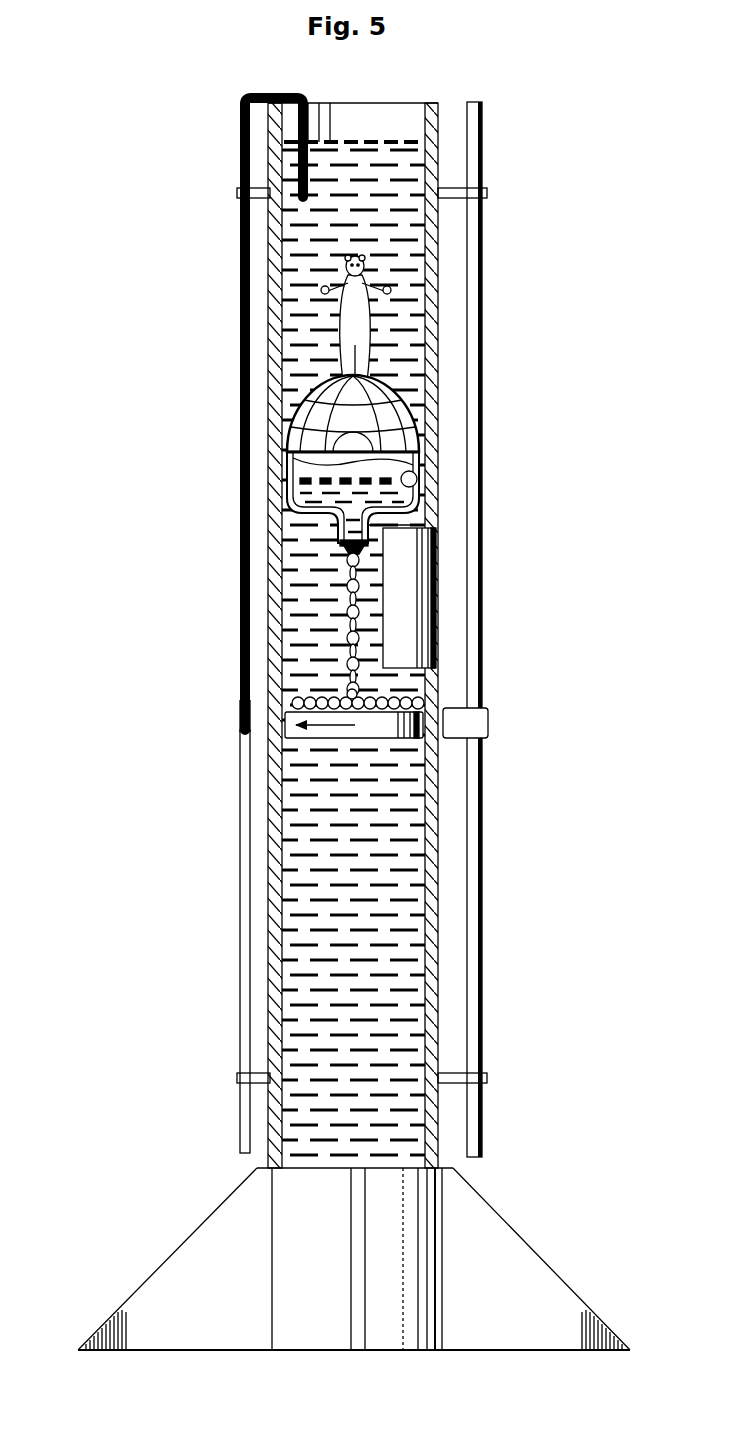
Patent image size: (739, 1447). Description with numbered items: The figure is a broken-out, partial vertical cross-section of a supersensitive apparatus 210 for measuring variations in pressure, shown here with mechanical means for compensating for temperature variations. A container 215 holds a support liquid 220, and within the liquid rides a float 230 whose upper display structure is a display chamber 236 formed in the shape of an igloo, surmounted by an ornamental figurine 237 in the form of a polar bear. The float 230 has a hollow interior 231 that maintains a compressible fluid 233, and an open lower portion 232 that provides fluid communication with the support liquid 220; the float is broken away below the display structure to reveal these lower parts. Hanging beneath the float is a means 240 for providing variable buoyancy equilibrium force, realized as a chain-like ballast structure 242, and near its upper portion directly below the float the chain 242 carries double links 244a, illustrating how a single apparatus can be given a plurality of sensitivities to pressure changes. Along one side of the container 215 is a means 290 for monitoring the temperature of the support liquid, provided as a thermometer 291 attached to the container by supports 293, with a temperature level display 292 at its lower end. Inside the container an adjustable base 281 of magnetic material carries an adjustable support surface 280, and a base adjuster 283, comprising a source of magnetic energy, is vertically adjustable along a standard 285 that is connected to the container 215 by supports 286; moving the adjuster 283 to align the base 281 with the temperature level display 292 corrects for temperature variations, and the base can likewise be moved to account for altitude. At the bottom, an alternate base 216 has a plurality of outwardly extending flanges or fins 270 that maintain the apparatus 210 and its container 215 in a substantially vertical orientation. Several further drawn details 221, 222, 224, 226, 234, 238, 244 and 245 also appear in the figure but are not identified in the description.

The supersensitive apparatus 210 is at (170, 572).
The container 215 is at (266, 857).
The base 216 is at (393, 1332).
The support liquid 220 is at (405, 860).
The container body 221 is at (297, 498).
The tube bottom 222 is at (308, 1166).
The liquid level 224 is at (372, 141).
The hopper assembly 226 is at (361, 461).
The float 230 is at (290, 403).
The hollow interior 231 is at (417, 478).
The open lower portion 232 is at (336, 532).
The compressible fluid 233 is at (296, 462).
The dome lattice 234 is at (412, 437).
The display chamber 236 is at (318, 435).
The ornamental figurine 237 is at (325, 298).
The ledge 238 is at (420, 512).
The means for providing variable buoyancy equilibrium force 240 is at (333, 571).
The chain-like ballast structure 242 is at (350, 652).
The side box 244 is at (405, 630).
The double links 244a is at (405, 573).
The beads 245 is at (430, 700).
The flanges or fins 270 is at (214, 1228).
The adjustable support surface 280 is at (300, 706).
The adjustable base 281 is at (385, 728).
The base adjuster 283 is at (489, 726).
The standard 285 is at (479, 818).
The supports 286 is at (481, 192).
The means for monitoring the temperature of support liquid 290 is at (231, 113).
The thermometer 291 is at (240, 594).
The temperature level display 292 is at (245, 732).
The supports 293 is at (264, 192).